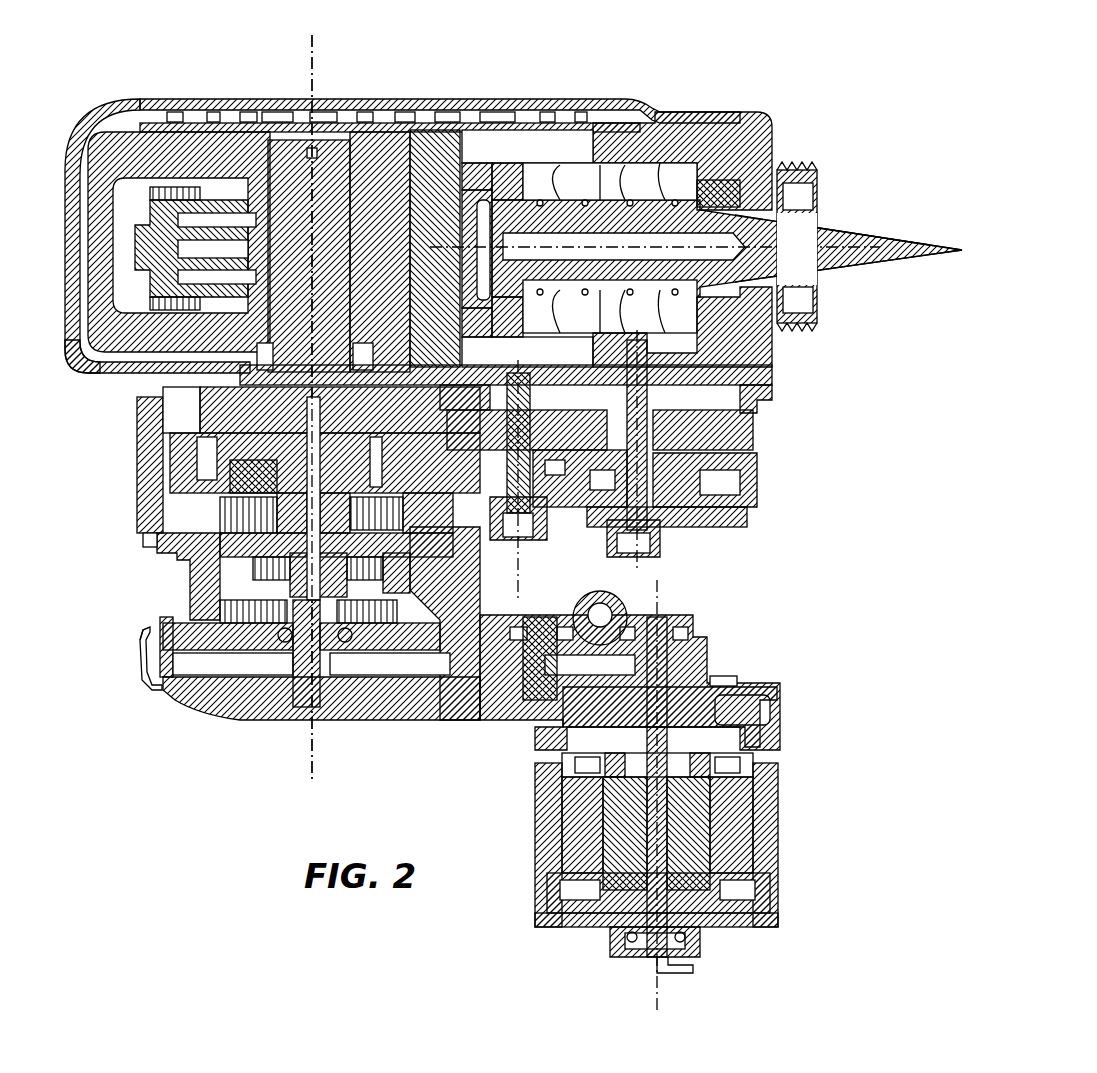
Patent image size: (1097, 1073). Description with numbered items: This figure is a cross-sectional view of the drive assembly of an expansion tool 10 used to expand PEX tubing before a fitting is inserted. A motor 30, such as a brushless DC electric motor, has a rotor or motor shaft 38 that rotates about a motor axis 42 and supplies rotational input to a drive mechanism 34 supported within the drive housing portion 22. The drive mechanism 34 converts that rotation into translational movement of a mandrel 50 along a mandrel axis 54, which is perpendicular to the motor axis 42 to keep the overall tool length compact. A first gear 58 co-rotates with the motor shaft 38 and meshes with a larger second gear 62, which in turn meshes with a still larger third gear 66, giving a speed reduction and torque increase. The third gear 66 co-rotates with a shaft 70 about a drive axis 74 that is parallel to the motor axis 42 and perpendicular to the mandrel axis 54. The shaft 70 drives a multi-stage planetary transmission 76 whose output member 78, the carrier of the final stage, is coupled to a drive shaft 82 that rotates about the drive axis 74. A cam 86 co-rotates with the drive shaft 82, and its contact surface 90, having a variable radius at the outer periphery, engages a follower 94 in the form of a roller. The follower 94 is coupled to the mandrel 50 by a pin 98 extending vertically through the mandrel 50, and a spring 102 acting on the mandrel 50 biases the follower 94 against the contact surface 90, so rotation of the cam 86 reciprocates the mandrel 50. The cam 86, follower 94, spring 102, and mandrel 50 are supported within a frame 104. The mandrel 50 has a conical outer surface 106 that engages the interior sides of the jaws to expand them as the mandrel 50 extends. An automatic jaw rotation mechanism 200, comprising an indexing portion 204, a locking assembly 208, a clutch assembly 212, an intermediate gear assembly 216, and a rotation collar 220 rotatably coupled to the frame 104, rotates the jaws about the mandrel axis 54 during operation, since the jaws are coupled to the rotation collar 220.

The expansion tool 10 is at (82, 605).
The drive housing portion 22 is at (347, 103).
The motor 30 is at (536, 813).
The drive mechanism 34 is at (160, 407).
The motor shaft 38 is at (633, 845).
The motor axis 42 is at (657, 598).
The mandrel 50 is at (647, 217).
The mandrel axis 54 is at (877, 265).
The first gear 58 is at (703, 672).
The second gear 62 is at (465, 700).
The third gear 66 is at (229, 666).
The shaft 70 is at (307, 657).
The drive axis 74 is at (312, 78).
The transmission 76 is at (203, 560).
The output member 78 is at (227, 413).
The drive shaft 82 is at (293, 240).
The cam 86 is at (180, 183).
The contact surface 90 is at (87, 153).
The follower 94 is at (505, 205).
The pin 98 is at (423, 150).
The spring 102 is at (630, 193).
The frame 104 is at (83, 365).
The conical outer surface 106 is at (862, 228).
The automatic jaw rotation mechanism 200 is at (765, 428).
The indexing portion 204 is at (530, 527).
The locking assembly 208 is at (653, 520).
The clutch assembly 212 is at (727, 507).
The intermediate gear assembly 216 is at (757, 383).
The rotation collar 220 is at (800, 300).